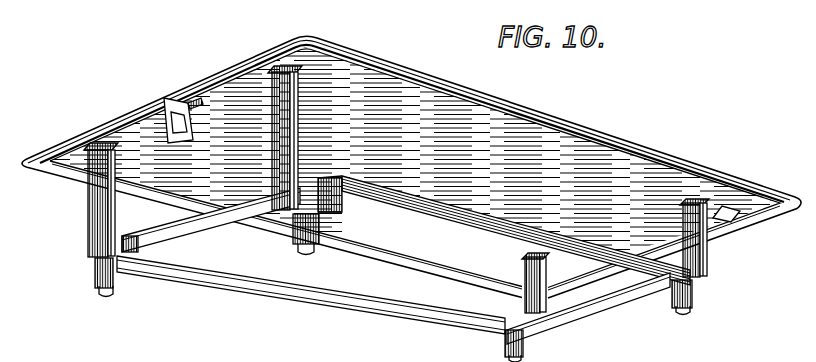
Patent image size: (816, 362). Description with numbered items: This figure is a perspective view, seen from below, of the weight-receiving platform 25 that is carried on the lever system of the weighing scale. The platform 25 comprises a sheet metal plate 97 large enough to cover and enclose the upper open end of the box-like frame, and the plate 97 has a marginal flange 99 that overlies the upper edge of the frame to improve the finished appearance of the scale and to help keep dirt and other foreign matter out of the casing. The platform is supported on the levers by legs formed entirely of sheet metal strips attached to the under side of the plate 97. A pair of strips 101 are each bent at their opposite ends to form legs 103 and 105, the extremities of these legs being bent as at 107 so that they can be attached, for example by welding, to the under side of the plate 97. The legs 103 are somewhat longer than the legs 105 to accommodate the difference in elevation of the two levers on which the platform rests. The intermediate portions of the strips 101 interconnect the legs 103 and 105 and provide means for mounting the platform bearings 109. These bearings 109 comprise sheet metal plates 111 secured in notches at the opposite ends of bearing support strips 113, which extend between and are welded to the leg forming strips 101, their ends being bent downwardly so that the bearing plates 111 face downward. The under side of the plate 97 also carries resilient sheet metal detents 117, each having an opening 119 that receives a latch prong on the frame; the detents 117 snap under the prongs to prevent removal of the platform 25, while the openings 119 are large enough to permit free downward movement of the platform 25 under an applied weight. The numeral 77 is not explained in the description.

The weight-receiving platform 25 is at (681, 145).
The support member 77 is at (30, 361).
The sheet metal plate 97 is at (372, 93).
The marginal flange 99 is at (572, 133).
The leg forming strips 101 is at (292, 275).
The legs 103 is at (95, 216).
The legs 105 is at (524, 268).
The bent extremities 107 is at (277, 74).
The platform bearings 109 is at (100, 298).
The sheet metal plates 111 is at (106, 280).
The bearing support strips 113 is at (232, 226).
The sheet metal detents 117 is at (204, 128).
The opening 119 is at (184, 137).